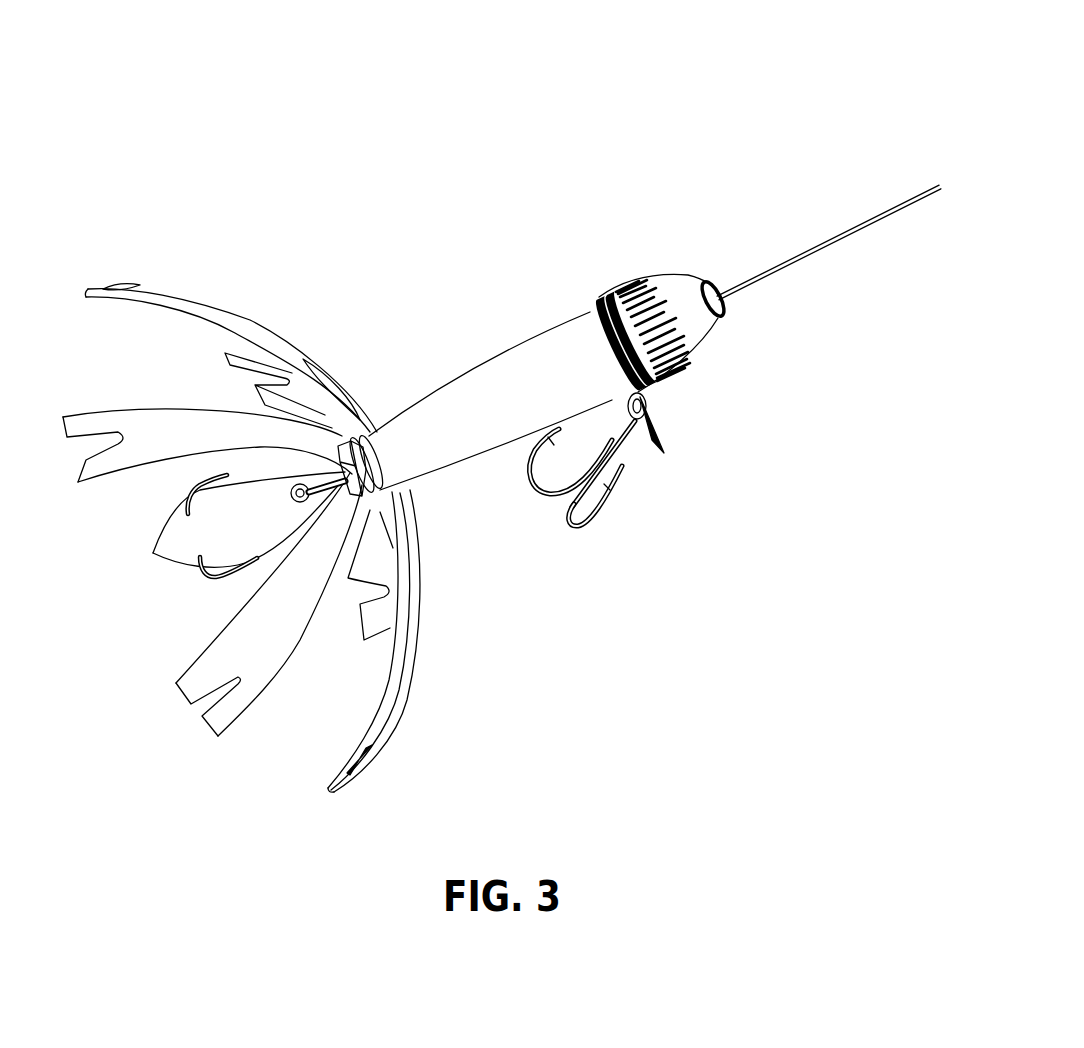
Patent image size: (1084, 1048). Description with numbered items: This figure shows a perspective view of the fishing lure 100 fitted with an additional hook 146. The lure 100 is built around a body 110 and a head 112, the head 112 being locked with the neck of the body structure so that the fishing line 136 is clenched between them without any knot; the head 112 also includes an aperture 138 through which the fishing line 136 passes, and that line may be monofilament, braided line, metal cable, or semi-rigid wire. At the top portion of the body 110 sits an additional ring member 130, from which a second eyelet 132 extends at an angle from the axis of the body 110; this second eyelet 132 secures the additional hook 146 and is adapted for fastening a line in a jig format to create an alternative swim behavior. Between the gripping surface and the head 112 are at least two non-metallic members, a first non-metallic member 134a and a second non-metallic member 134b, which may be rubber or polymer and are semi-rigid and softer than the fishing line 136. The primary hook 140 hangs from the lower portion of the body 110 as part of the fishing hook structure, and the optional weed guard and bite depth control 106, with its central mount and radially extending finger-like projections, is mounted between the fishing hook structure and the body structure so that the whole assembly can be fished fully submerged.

The fishing lure 100 is at (852, 42).
The weed guard and bite depth control 106 is at (404, 736).
The body 110 is at (455, 465).
The head 112 is at (686, 297).
The additional ring member 130 is at (597, 320).
The second eyelet 132 is at (656, 444).
The first non-metallic member 134a is at (606, 296).
The second non-metallic member 134b is at (600, 300).
The fishing line 136 is at (847, 230).
The aperture 138 is at (717, 322).
The hook 140 is at (177, 503).
The additional hook 146 is at (583, 530).